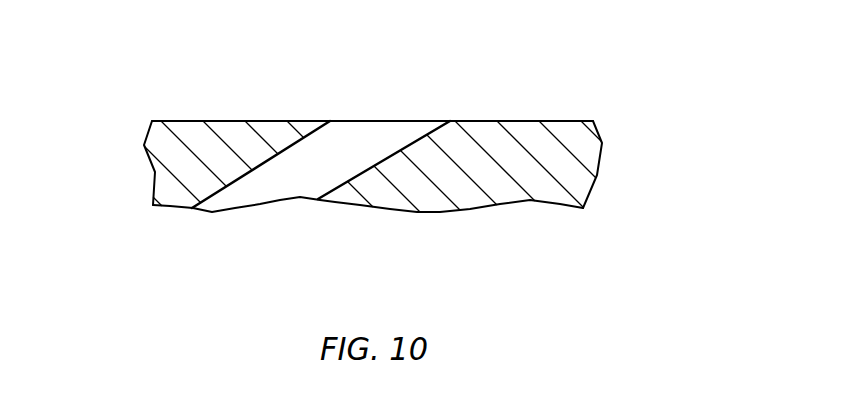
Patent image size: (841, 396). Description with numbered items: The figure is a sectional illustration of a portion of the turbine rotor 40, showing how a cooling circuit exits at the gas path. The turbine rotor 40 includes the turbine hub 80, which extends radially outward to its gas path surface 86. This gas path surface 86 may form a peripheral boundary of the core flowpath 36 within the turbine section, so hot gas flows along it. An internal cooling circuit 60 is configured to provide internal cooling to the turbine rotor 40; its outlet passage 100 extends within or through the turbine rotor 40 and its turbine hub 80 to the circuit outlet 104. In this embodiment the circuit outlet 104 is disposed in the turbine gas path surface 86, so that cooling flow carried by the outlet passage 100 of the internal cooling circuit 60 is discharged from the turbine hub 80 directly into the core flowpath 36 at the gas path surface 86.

The turbine rotor 40 is at (120, 103).
The core flowpath 36 is at (274, 69).
The circuit outlet 104 is at (380, 121).
The gas path surface 86 is at (538, 121).
The turbine hub 80 is at (605, 165).
The internal cooling circuit 60 is at (208, 212).
The outlet passage 100 is at (266, 192).